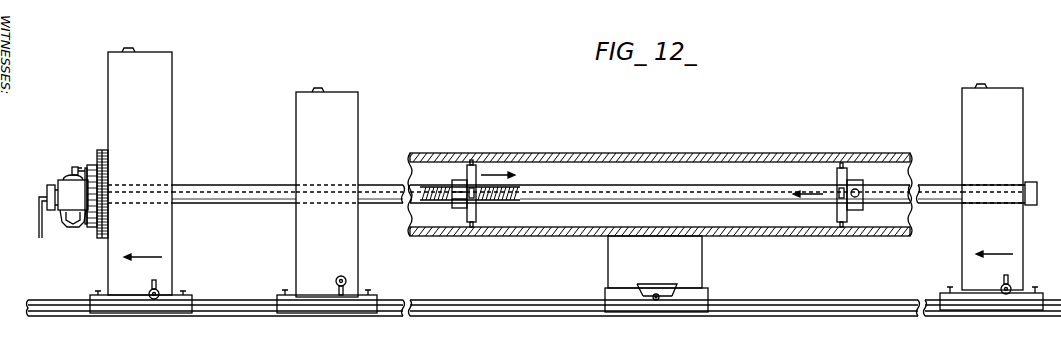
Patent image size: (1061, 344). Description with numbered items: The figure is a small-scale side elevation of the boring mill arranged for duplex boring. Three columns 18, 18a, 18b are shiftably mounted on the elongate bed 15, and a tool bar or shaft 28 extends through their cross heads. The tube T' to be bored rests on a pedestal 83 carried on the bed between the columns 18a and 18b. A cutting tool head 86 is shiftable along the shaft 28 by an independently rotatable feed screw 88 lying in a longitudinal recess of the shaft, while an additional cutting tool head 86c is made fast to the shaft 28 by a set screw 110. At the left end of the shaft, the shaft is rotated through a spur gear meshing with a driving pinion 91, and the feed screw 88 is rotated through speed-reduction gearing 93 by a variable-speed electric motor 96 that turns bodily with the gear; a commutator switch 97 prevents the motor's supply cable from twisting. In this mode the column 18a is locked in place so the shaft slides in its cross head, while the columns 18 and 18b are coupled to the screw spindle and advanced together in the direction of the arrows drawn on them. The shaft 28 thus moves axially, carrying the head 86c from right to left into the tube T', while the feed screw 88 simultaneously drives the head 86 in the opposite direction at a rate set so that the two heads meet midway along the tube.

The bed 15 is at (528, 308).
The column 18 is at (110, 46).
The column 18a is at (297, 82).
The column 18b is at (958, 73).
The tool bar or shaft 28 is at (235, 186).
The tube T' is at (660, 179).
The feed screw 88 is at (518, 186).
The cutting tool head 86 is at (477, 213).
The additional cutting tool head 86c is at (837, 217).
The set screw 110 is at (860, 207).
The pedestal 83 is at (697, 260).
The speed-reduction gearing 93 is at (87, 163).
The variable-speed electric motor 96 is at (67, 227).
The commutator switch 97 is at (56, 180).
The driving pinion 91 is at (38, 228).